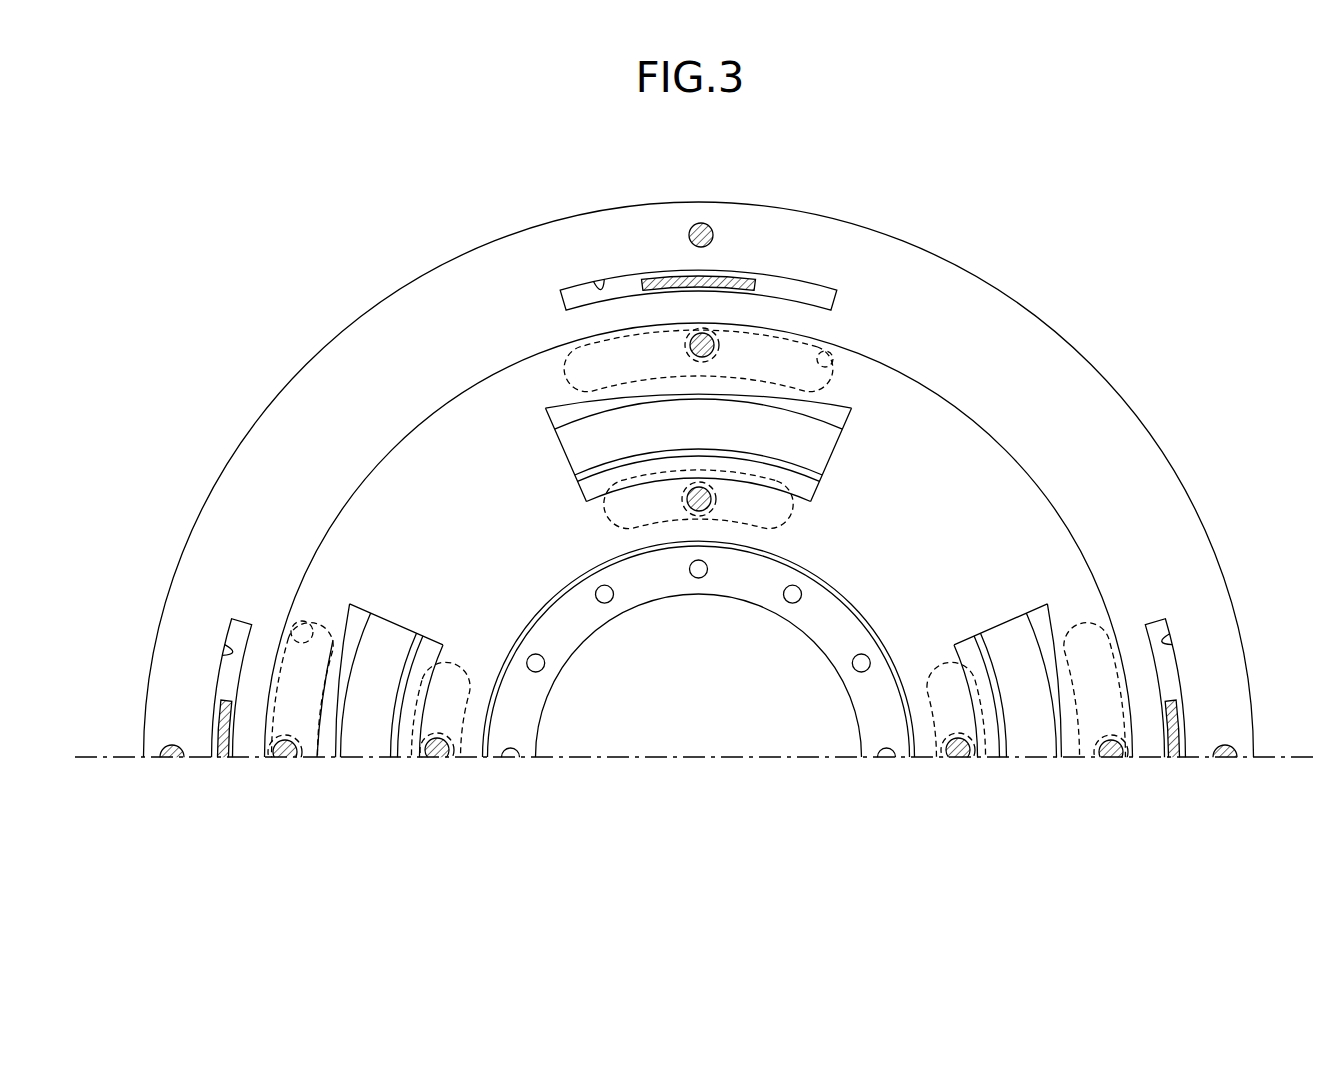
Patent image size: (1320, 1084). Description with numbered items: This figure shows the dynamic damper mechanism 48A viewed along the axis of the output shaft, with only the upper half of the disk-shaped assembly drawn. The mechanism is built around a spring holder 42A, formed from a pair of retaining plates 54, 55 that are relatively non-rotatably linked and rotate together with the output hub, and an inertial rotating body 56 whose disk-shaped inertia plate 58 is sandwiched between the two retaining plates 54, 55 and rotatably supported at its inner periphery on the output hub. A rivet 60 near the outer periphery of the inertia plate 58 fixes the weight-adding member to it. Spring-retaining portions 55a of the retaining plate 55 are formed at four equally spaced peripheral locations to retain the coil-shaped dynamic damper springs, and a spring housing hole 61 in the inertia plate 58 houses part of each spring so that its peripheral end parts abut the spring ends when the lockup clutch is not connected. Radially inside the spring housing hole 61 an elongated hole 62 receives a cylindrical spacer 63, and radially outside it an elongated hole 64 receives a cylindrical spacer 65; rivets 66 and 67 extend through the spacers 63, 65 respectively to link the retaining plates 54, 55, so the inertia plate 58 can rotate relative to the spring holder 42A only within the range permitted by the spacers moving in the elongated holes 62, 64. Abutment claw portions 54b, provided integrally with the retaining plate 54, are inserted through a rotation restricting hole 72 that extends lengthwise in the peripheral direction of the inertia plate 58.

The spring holder 42A is at (768, 480).
The dynamic damper mechanism 48A is at (699, 479).
The retaining plate 54 is at (560, 650).
The abutment claw portion 54b is at (676, 278).
The retaining plate 55 is at (1020, 500).
The spring-retaining portion 55a is at (724, 629).
The inertial rotating body 56 is at (1033, 310).
The inertia plate 58 is at (937, 292).
The rivet 60 is at (702, 224).
The spring housing hole 61 is at (778, 468).
The elongated hole 62 is at (786, 512).
The cylindrical spacer 63 is at (722, 502).
The elongated hole 64 is at (822, 352).
The cylindrical spacer 65 is at (719, 352).
The rivet 66 is at (682, 650).
The rivet 67 is at (698, 525).
The rotation restricting hole 72 is at (601, 283).